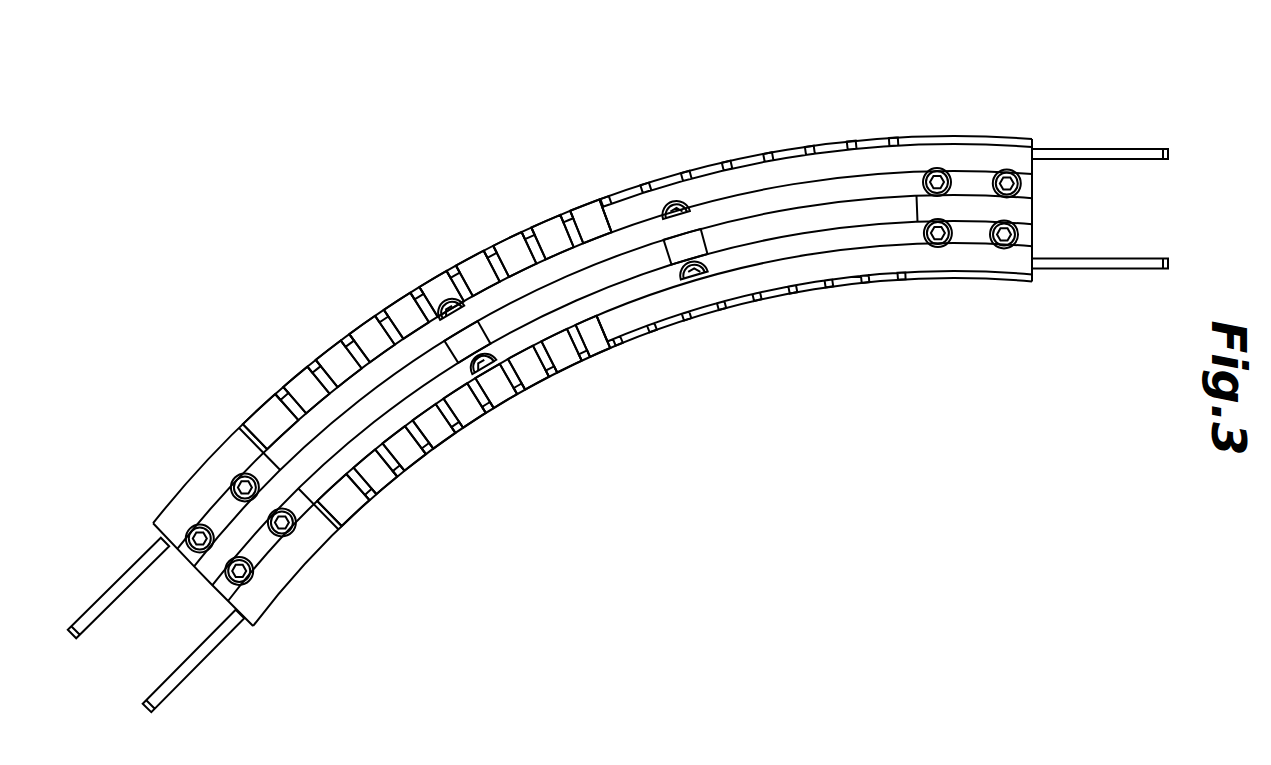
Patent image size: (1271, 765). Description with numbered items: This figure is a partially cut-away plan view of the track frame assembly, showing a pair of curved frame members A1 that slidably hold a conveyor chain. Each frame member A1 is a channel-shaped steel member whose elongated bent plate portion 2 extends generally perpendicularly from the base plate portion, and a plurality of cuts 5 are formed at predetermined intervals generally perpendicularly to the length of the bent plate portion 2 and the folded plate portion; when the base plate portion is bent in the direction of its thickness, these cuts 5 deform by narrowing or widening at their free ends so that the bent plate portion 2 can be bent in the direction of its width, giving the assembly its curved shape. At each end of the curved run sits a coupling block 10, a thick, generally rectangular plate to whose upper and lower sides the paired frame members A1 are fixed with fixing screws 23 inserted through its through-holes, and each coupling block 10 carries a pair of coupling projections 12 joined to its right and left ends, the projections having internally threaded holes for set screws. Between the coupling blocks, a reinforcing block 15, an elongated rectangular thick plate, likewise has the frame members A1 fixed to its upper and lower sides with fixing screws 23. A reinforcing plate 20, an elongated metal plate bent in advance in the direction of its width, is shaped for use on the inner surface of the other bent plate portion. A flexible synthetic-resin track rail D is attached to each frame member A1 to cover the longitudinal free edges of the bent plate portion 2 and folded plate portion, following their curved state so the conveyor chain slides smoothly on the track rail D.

The coupling block 10 is at (977, 210).
The coupling projection 12 is at (1098, 152).
The track rail D is at (710, 190).
The reinforcing block 15 is at (640, 232).
The bent plate portion 2 is at (370, 333).
The frame member A1 is at (337, 347).
The cut 5 is at (297, 397).
The reinforcing plate 20 is at (287, 448).
The fixing screw 23 is at (290, 530).